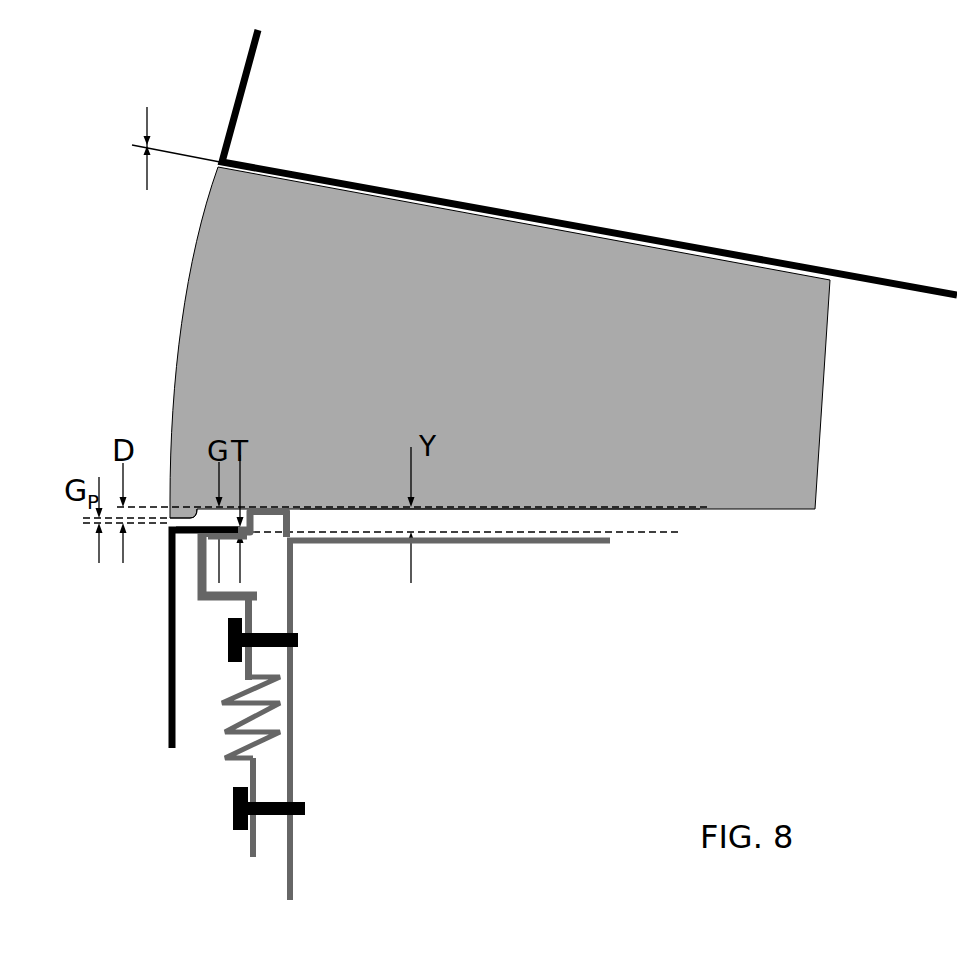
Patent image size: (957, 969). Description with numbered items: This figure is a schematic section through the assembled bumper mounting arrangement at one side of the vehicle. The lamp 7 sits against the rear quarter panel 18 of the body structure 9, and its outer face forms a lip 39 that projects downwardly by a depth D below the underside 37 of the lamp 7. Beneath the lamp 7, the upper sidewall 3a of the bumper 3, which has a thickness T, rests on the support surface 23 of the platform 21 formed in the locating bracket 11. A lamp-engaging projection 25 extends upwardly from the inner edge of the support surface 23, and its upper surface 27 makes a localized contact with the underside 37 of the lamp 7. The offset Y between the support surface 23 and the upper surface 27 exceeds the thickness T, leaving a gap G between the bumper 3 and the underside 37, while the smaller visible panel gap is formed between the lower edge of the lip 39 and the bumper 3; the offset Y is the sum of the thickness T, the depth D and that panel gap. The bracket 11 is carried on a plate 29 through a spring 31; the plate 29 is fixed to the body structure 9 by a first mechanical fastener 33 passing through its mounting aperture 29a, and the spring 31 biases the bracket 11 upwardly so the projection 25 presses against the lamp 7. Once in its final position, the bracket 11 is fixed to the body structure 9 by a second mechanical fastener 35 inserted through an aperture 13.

The rear quarter panel 18 is at (240, 119).
The lamp 7 is at (218, 278).
The lip 39 is at (183, 512).
The bumper 3 is at (168, 707).
The upper sidewall 3a is at (206, 525).
The support surface 23 is at (200, 532).
The platform 21 is at (214, 536).
The locating bracket 11 is at (205, 575).
The upper surface 27 is at (289, 506).
The lamp-engaging projection 25 is at (252, 513).
The underside 37 is at (382, 507).
The body structure 9 is at (583, 545).
The aperture 13 is at (250, 645).
The second mechanical fastener 35 is at (296, 635).
The spring 31 is at (258, 732).
The plate 29 is at (260, 790).
The first mechanical fastener 33 is at (291, 802).
The mounting aperture 29a is at (253, 812).